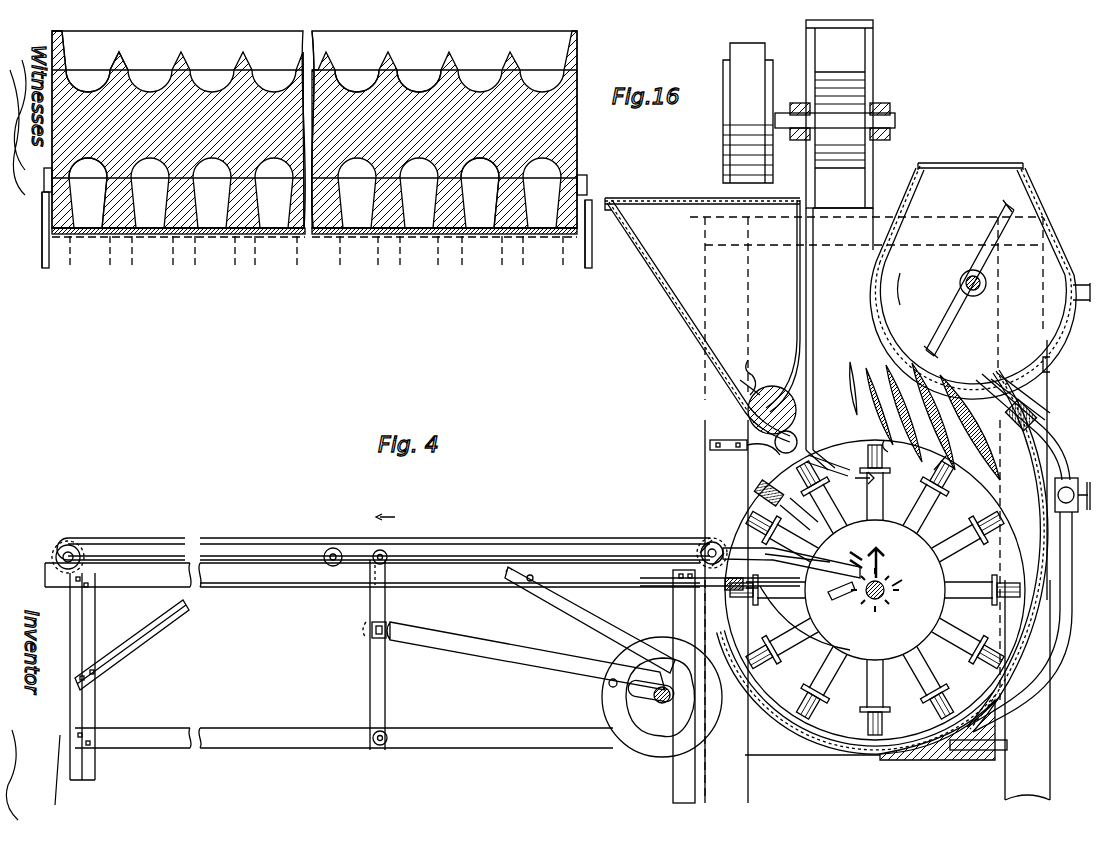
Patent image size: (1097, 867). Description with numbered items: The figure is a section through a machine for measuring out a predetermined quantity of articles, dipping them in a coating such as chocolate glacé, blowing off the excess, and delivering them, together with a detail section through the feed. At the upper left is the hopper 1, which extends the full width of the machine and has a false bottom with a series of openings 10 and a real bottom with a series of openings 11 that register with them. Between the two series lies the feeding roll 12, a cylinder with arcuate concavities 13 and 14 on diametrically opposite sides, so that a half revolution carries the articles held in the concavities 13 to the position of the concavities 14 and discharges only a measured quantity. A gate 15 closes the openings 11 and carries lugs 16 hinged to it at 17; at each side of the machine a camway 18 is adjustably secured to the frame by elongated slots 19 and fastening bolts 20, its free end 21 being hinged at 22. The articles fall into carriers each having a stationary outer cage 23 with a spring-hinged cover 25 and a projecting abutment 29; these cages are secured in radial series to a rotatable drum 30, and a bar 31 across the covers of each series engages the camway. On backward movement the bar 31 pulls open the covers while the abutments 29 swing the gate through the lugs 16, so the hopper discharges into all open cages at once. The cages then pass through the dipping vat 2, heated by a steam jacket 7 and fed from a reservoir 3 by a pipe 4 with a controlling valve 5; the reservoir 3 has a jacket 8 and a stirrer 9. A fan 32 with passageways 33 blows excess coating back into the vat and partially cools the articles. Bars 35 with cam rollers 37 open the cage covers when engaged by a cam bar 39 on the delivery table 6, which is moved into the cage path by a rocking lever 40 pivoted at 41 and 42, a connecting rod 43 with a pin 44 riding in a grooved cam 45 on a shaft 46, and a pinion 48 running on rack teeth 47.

In FIG. 4, the hopper 1 is at (676, 312).
In FIG. 4, the dipping vat 2 is at (1005, 690).
In FIG. 4, the reservoir 3 is at (1066, 248).
In FIG. 4, the pipe 4 is at (1072, 558).
In FIG. 4, the controlling valve 5 is at (1068, 478).
In FIG. 4, the delivery table 6 is at (262, 545).
In FIG. 4, the steam jacket 7 is at (1005, 712).
In FIG. 4, the jacket 8 is at (1040, 206).
In FIG. 4, the stirrer 9 is at (956, 300).
In FIG. 16, the opening 10 is at (545, 82).
In FIG. 4, the opening 10 is at (748, 406).
In FIG. 16, the opening 11 is at (90, 218).
In FIG. 16, the feeding roll 12 is at (577, 132).
In FIG. 4, the feeding roll 12 is at (775, 440).
In FIG. 16, the arcuate concavity 13 is at (497, 65).
In FIG. 4, the arcuate concavity 13 is at (752, 392).
In FIG. 16, the arcuate concavity 14 is at (556, 170).
In FIG. 16, the gate 15 is at (304, 240).
In FIG. 4, the gate 15 is at (813, 402).
In FIG. 16, the lug 16 is at (44, 266).
In FIG. 4, the lug 16 is at (757, 392).
In FIG. 16, the hinge 17 is at (38, 248).
In FIG. 4, the hinge 17 is at (606, 208).
In FIG. 4, the camway 18 is at (712, 448).
In FIG. 4, the elongated slot 19 is at (812, 568).
In FIG. 4, the fastening bolt 20 is at (732, 451).
In FIG. 4, the free end 21 is at (795, 514).
In FIG. 4, the hinge 22 is at (768, 494).
In FIG. 16, the stationary outer cage 23 is at (220, 258).
In FIG. 4, the stationary outer cage 23 is at (872, 460).
In FIG. 4, the cover 25 is at (882, 450).
In FIG. 4, the abutment 29 is at (930, 472).
In FIG. 4, the rotatable drum 30 is at (875, 590).
In FIG. 4, the bar 31 is at (873, 604).
In FIG. 4, the fan 32 is at (873, 62).
In FIG. 4, the passageway 33 is at (935, 438).
In FIG. 4, the bar 35 is at (898, 584).
In FIG. 4, the cam roller 37 is at (883, 554).
In FIG. 4, the cam bar 39 is at (848, 592).
In FIG. 4, the rocking lever 40 is at (371, 668).
In FIG. 4, the pivot 41 is at (374, 744).
In FIG. 4, the pivot 42 is at (374, 562).
In FIG. 4, the connecting rod 43 is at (486, 653).
In FIG. 4, the pin 44 is at (609, 685).
In FIG. 4, the grooved cam 45 is at (664, 752).
In FIG. 4, the shaft 46 is at (656, 700).
In FIG. 4, the rack teeth 47 is at (772, 592).
In FIG. 4, the pinion 48 is at (702, 547).